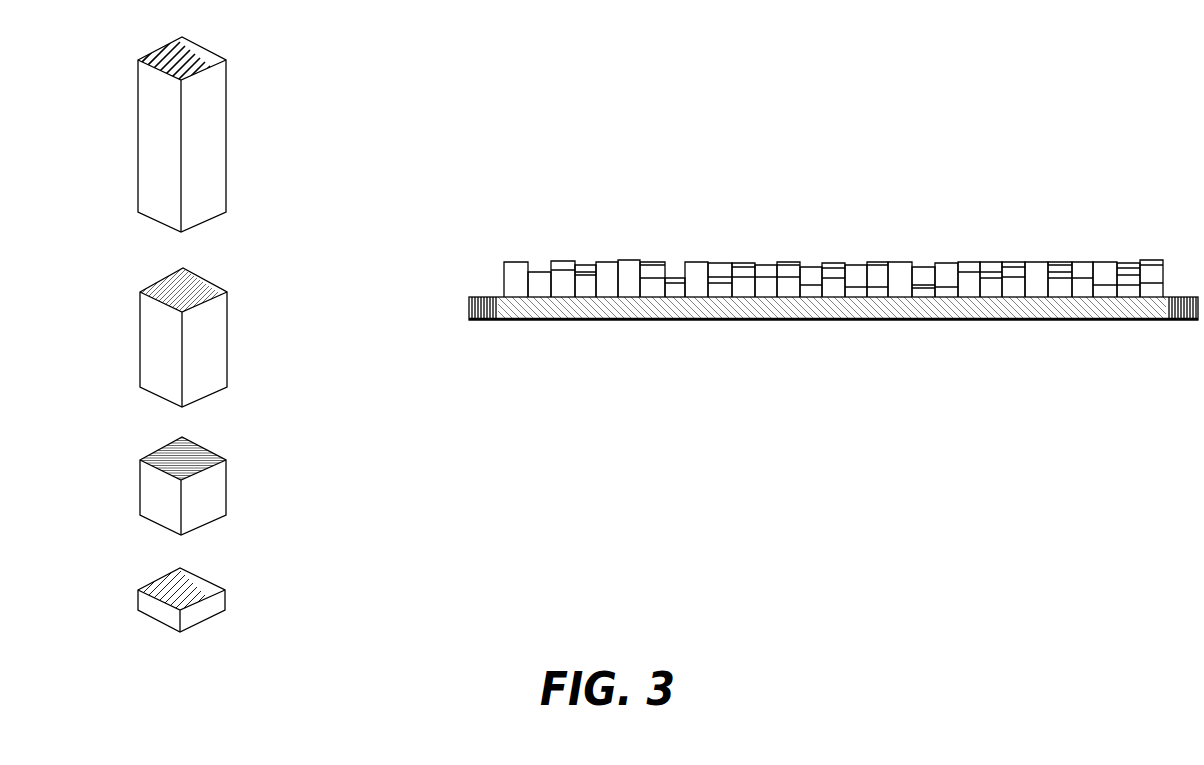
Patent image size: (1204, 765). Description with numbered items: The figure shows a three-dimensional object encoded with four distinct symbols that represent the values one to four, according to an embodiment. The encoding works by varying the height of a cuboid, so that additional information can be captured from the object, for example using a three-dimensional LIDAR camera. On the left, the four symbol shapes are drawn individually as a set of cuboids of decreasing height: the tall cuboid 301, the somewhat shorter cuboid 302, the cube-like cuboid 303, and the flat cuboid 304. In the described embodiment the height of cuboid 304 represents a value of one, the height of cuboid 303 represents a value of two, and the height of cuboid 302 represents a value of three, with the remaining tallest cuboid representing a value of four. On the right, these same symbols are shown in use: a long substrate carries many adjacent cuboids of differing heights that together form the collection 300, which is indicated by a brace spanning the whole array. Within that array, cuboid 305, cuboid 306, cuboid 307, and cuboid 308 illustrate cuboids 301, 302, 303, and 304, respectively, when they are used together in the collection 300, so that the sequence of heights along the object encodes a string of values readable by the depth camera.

The collection 300 is at (833, 322).
The cuboid 301 is at (240, 134).
The cuboid 302 is at (241, 341).
The cuboid 303 is at (240, 484).
The cuboid 304 is at (241, 599).
The cuboid 305 is at (695, 289).
The cuboid 306 is at (739, 288).
The cuboid 307 is at (787, 288).
The cuboid 308 is at (816, 345).